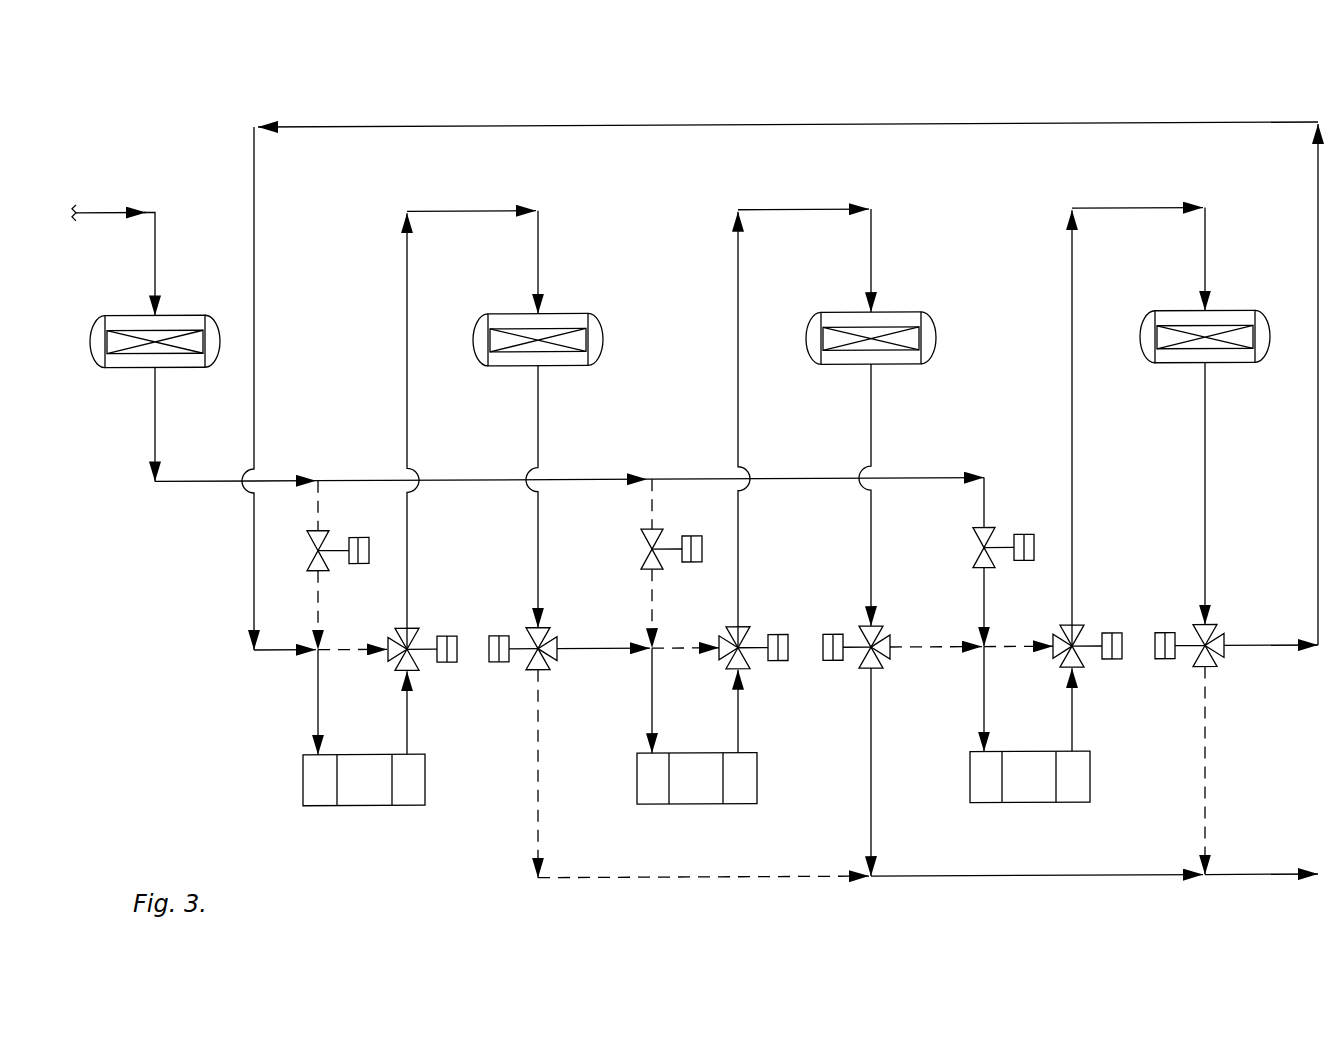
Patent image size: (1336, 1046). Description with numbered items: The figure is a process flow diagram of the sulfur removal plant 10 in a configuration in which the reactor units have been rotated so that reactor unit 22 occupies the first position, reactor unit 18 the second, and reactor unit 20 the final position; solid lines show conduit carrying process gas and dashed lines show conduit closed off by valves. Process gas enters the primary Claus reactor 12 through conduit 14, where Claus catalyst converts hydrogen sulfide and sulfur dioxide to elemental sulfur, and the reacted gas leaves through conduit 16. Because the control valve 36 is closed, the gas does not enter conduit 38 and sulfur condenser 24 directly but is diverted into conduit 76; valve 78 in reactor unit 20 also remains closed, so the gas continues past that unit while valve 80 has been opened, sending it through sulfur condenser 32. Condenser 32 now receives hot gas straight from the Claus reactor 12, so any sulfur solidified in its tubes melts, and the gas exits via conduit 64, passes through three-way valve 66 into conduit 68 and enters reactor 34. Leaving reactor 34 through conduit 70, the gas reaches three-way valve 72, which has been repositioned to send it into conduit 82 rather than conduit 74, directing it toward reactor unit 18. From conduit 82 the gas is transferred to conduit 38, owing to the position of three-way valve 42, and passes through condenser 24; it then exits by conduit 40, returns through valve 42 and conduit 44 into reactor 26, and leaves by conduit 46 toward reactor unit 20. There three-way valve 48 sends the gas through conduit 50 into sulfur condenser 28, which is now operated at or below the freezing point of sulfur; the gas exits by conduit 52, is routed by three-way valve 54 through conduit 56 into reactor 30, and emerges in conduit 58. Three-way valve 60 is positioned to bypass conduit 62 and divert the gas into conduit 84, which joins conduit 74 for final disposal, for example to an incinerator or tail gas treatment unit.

The sulfur removal plant 10 is at (1084, 100).
The primary Claus reactor 12 is at (107, 316).
The conduit 14 is at (156, 243).
The conduit 16 is at (155, 415).
The reactor unit 18 is at (378, 262).
The reactor unit 20 is at (706, 262).
The reactor unit 22 is at (1046, 270).
The sulfur condenser 24 is at (360, 806).
The reactor 26 is at (555, 315).
The sulfur condenser 28 is at (700, 806).
The reactor 30 is at (888, 315).
The sulfur condenser 32 is at (1036, 806).
The reactor 34 is at (1222, 315).
The control valve 36 is at (358, 538).
The conduit 38 is at (318, 700).
The conduit 40 is at (407, 712).
The three-way valve 42 is at (447, 637).
The conduit 44 is at (407, 378).
The conduit 46 is at (538, 510).
The three-way valve 48 is at (499, 663).
The conduit 50 is at (614, 650).
The conduit 52 is at (738, 720).
The three-way valve 54 is at (778, 637).
The conduit 56 is at (738, 400).
The conduit 58 is at (871, 418).
The three-way valve 60 is at (833, 663).
The conduit 62 is at (905, 650).
The conduit 64 is at (1072, 724).
The three-way valve 66 is at (1112, 637).
The conduit 68 is at (1072, 420).
The conduit 70 is at (1205, 455).
The three-way valve 72 is at (1165, 663).
The conduit 74 is at (1230, 879).
The conduit 76 is at (440, 481).
The valve 78 is at (691, 538).
The valve 80 is at (1024, 538).
The conduit 82 is at (1242, 650).
The conduit 84 is at (871, 772).